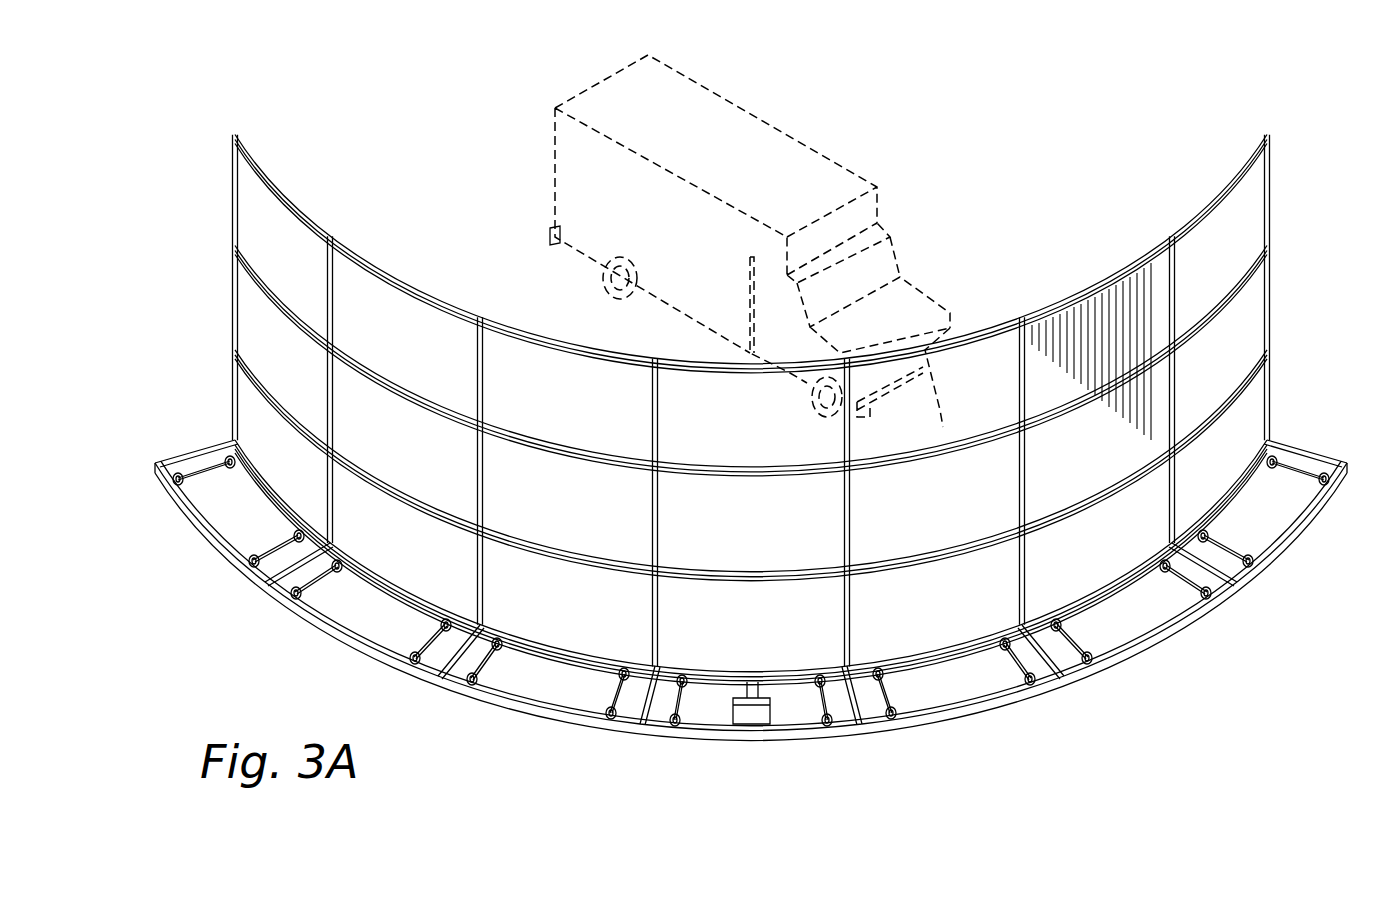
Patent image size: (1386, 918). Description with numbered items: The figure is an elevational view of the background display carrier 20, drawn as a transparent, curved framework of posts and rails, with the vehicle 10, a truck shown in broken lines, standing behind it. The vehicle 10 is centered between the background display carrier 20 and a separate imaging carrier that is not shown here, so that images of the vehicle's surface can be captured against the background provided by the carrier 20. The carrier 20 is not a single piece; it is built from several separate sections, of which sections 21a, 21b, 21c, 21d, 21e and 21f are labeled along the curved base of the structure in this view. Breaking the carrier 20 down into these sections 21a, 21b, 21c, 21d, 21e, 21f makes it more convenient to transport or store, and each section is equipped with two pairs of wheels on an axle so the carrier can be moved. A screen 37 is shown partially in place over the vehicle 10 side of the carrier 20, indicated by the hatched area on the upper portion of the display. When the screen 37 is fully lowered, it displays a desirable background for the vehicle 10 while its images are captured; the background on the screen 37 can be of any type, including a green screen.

The vehicle 10 is at (766, 121).
The background display carrier 20 is at (234, 176).
The section 21a is at (1295, 548).
The section 21b is at (1160, 648).
The section 21c is at (978, 716).
The section 21d is at (515, 712).
The section 21e is at (325, 636).
The section 21f is at (187, 530).
The screen 37 is at (1097, 464).